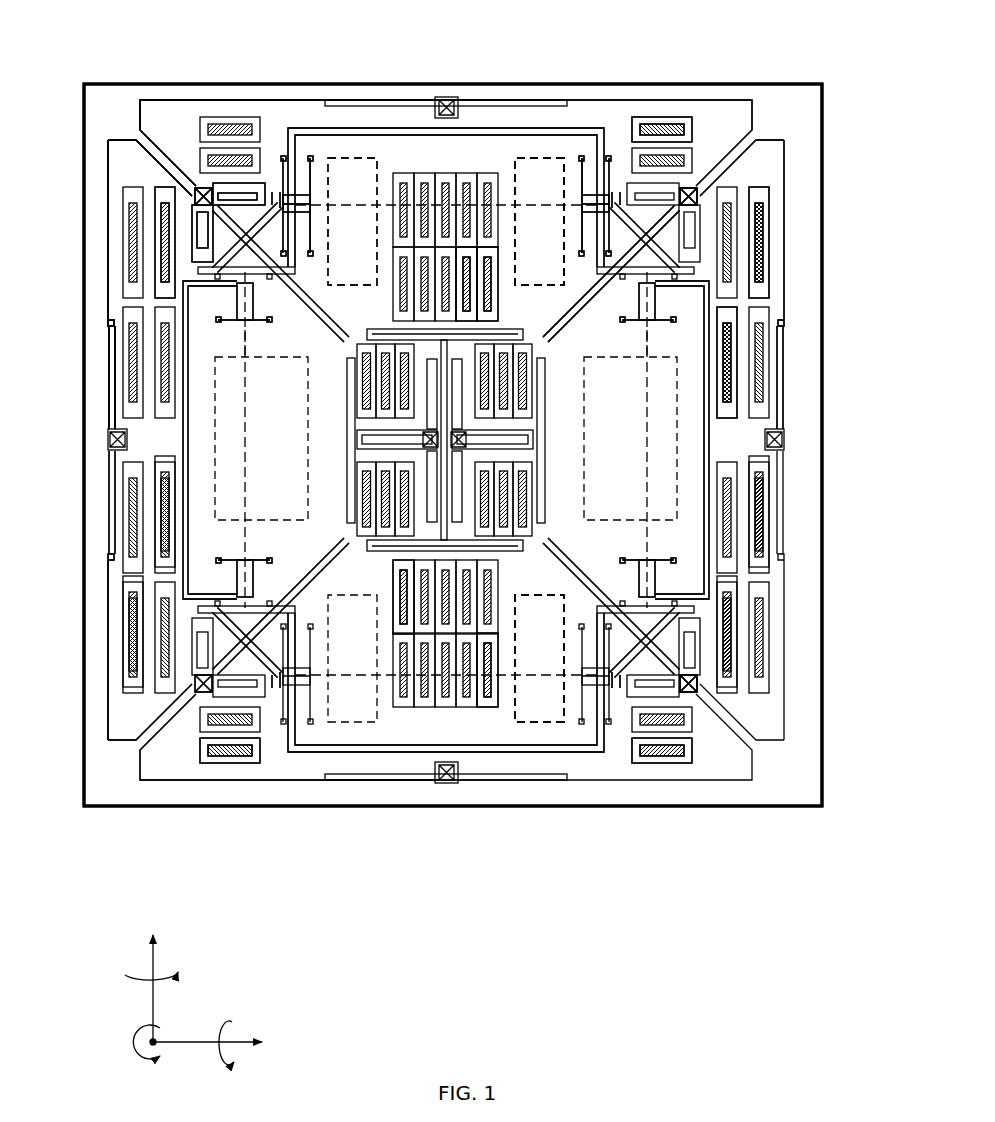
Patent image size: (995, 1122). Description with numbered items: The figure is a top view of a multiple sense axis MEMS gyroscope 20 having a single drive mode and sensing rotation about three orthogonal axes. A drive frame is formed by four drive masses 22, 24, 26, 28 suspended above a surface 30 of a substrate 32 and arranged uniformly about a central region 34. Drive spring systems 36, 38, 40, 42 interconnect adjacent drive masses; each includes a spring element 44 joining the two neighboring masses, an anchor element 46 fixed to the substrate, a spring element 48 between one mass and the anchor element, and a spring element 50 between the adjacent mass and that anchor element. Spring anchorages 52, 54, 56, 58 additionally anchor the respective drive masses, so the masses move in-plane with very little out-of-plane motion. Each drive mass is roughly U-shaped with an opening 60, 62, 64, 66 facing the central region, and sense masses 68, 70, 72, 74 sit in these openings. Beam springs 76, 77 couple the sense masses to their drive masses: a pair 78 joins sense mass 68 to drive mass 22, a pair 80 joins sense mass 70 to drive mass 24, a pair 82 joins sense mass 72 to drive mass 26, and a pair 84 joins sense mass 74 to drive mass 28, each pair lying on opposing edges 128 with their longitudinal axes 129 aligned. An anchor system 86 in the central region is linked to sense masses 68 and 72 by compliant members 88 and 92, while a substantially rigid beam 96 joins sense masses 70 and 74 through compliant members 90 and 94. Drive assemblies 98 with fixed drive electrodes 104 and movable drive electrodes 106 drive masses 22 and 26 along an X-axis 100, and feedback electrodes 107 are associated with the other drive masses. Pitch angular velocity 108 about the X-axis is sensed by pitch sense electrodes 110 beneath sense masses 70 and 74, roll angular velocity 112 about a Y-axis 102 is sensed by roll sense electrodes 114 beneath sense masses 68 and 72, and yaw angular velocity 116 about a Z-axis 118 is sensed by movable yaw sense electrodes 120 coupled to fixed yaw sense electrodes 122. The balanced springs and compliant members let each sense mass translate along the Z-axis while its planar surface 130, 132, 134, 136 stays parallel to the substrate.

The MEMS gyroscope 20 is at (512, 959).
The drive mass 22 is at (107, 283).
The drive mass 24 is at (178, 120).
The drive mass 26 is at (775, 165).
The drive mass 28 is at (220, 770).
The surface 30 is at (118, 111).
The substrate 32 is at (120, 82).
The central region 34 is at (640, 265).
The drive spring system 36 is at (194, 188).
The drive spring system 38 is at (697, 186).
The drive spring system 40 is at (697, 697).
The drive spring system 42 is at (192, 705).
The spring element 44 is at (668, 650).
The anchor element 46 is at (700, 688).
The spring element 48 is at (195, 228).
The spring element 50 is at (245, 183).
The spring anchorage 52 is at (106, 438).
The spring anchorage 54 is at (449, 96).
The spring anchorage 56 is at (786, 438).
The spring anchorage 58 is at (447, 784).
The opening 60 is at (183, 516).
The opening 62 is at (401, 128).
The opening 64 is at (712, 300).
The opening 66 is at (510, 742).
The sense mass 68 is at (200, 455).
The sense mass 70 is at (570, 172).
The sense mass 72 is at (720, 520).
The sense mass 74 is at (575, 718).
The beam spring 76 is at (637, 580).
The beam spring 77 is at (596, 690).
The pair of beam springs 78 is at (250, 556).
The pair of beam springs 80 is at (314, 170).
The pair of beam springs 82 is at (642, 556).
The pair of beam springs 84 is at (500, 806).
The anchor system 86 is at (466, 442).
The compliant member 88 is at (347, 400).
The compliant member 90 is at (386, 328).
The compliant member 92 is at (545, 395).
The compliant member 94 is at (386, 550).
The rigid beam 96 is at (462, 522).
The drive assembly 98 is at (116, 608).
The X-axis 100 is at (248, 1048).
The Y-axis 102 is at (148, 962).
The fixed drive electrode 104 is at (765, 612).
The movable drive electrode 106 is at (748, 553).
The electrodes 107 is at (662, 762).
The pitch angular velocity 108 is at (315, 1000).
The pitch sense electrode 110 is at (542, 724).
The roll angular velocity 112 is at (262, 946).
The roll sense electrode 114 is at (690, 485).
The yaw angular velocity 116 is at (195, 1087).
The Z-axis 118 is at (145, 1036).
The movable yaw sense electrode 120 is at (480, 280).
The fixed yaw sense electrode 122 is at (492, 300).
The opposing edges 128 is at (688, 282).
The longitudinal axis 129 is at (536, 673).
The planar surface 130 is at (301, 356).
The planar surface 132 is at (466, 166).
The planar surface 134 is at (626, 431).
The planar surface 136 is at (549, 586).